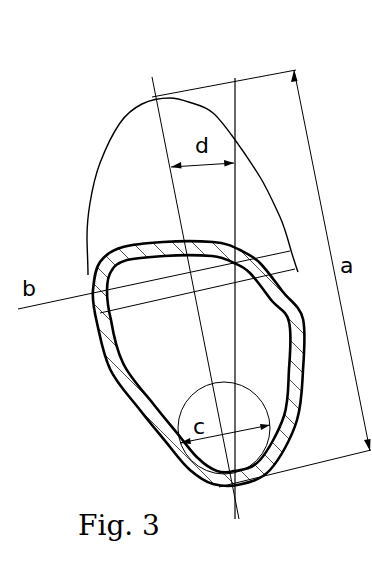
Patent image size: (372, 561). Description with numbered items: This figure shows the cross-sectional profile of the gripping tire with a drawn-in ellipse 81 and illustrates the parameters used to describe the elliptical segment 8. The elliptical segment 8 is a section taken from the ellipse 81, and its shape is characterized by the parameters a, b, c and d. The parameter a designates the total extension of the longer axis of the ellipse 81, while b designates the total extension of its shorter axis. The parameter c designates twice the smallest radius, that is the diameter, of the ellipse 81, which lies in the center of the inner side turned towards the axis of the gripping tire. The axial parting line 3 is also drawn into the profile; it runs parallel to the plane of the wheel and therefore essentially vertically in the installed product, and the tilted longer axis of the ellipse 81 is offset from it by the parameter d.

The axial parting line 3 is at (235, 78).
The ellipse 81 is at (118, 123).
The elliptical segment 8 is at (153, 437).